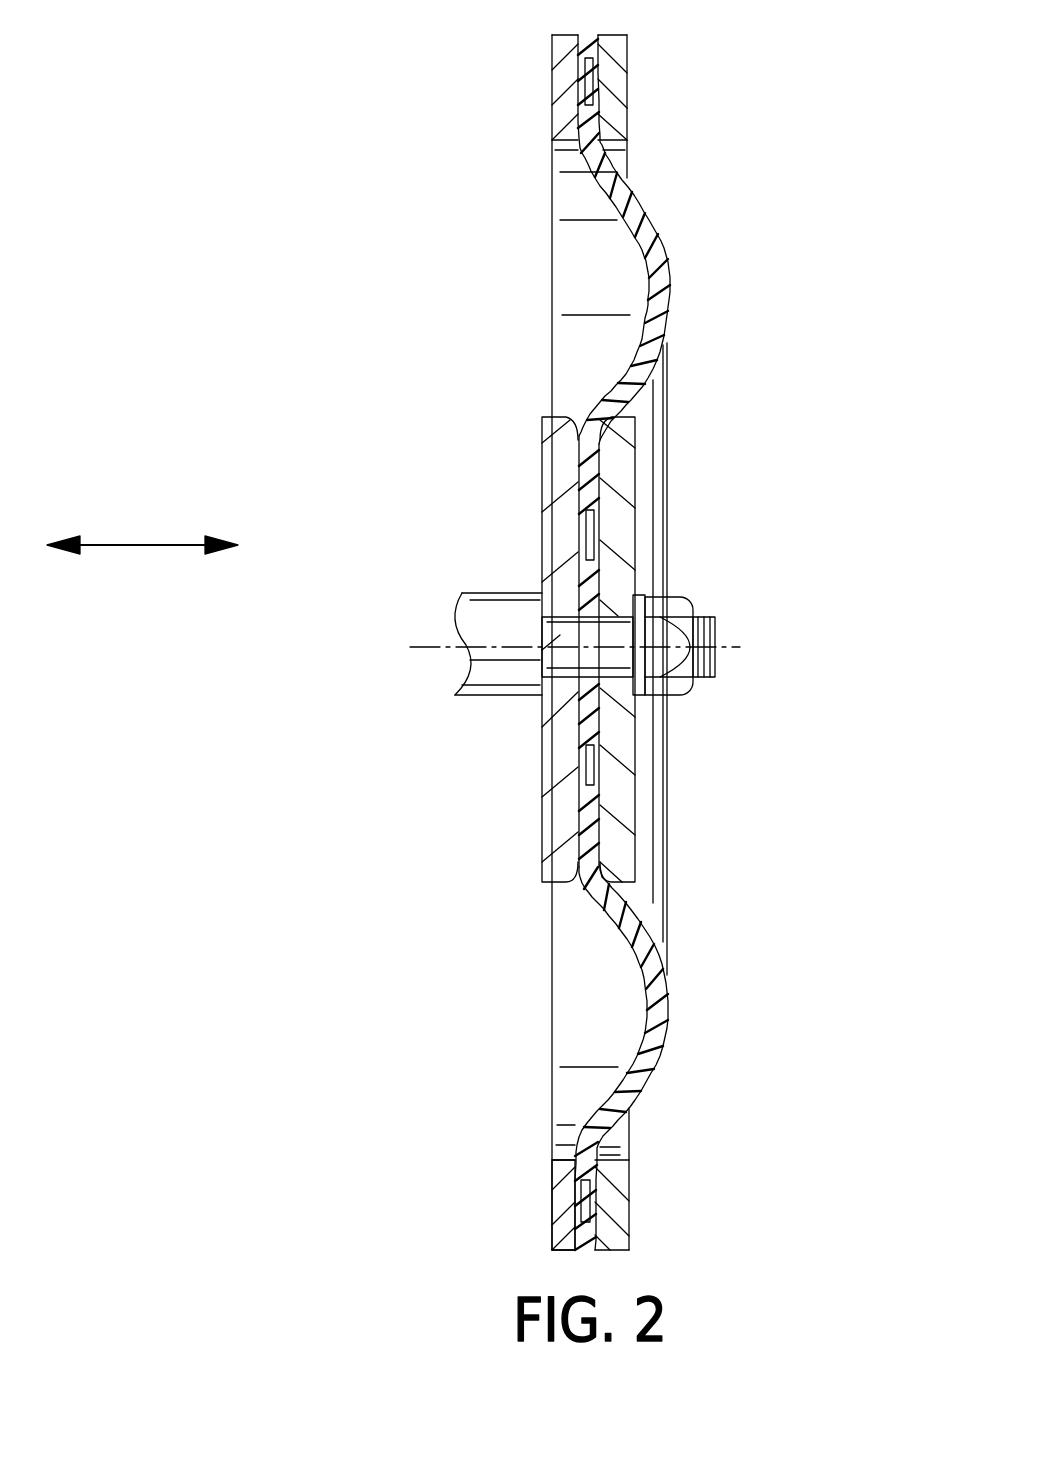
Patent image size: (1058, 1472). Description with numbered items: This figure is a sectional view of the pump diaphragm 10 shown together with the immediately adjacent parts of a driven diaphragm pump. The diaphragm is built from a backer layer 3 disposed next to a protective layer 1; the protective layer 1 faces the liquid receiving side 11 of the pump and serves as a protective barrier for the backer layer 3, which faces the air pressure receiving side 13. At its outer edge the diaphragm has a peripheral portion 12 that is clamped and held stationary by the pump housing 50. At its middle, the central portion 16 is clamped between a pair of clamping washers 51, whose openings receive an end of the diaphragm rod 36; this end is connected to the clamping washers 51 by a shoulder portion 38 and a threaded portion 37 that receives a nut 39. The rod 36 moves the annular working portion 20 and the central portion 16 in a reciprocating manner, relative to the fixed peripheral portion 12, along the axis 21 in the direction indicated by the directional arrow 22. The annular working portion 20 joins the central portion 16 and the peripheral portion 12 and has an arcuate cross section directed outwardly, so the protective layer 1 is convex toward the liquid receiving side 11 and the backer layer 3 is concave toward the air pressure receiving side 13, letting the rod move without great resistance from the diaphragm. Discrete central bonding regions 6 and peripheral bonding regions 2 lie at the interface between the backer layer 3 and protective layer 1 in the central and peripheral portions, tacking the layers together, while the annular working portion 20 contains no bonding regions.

The protective layer 1 is at (668, 1015).
The peripheral bonding regions 2 is at (600, 1183).
The backer layer 3 is at (642, 995).
The central bonding regions 6 is at (578, 767).
The pump diaphragm 10 is at (872, 122).
The liquid receiving side 11 is at (700, 258).
The peripheral portion 12 is at (565, 1185).
The air pressure receiving side 13 is at (527, 315).
The central portion 16 is at (580, 447).
The annular working portion 20 is at (668, 360).
The axis 21 is at (415, 650).
The directional arrow 22 is at (130, 545).
The diaphragm rod 36 is at (488, 618).
The threaded portion 37 is at (712, 628).
The shoulder portion 38 is at (548, 597).
The nut 39 is at (675, 697).
The pump housing 50 is at (555, 78).
The clamping washers 51 is at (542, 508).